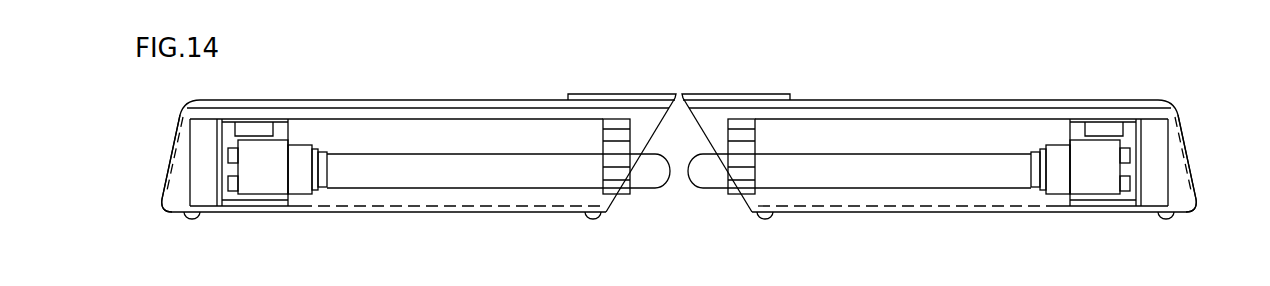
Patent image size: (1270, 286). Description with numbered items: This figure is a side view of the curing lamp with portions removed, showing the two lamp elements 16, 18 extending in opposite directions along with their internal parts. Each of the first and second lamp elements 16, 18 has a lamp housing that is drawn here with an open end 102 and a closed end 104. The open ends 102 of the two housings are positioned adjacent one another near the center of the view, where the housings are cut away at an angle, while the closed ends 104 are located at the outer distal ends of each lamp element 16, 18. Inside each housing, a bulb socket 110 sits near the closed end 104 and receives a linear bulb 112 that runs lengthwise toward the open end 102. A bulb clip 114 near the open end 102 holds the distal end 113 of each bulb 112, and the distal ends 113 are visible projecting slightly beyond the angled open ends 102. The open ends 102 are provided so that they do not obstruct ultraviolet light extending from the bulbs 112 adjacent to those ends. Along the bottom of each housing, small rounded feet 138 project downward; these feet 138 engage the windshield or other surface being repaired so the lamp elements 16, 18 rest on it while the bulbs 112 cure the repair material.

The lamp element 16 is at (388, 100).
The lamp element 18 is at (893, 100).
The open end 102 is at (750, 203).
The closed end 104 is at (160, 200).
The bulb socket 110 is at (238, 198).
The linear bulb 112 is at (462, 187).
The distal end 113 is at (702, 152).
The bulb clip 114 is at (727, 192).
The rounded foot 138 is at (190, 222).